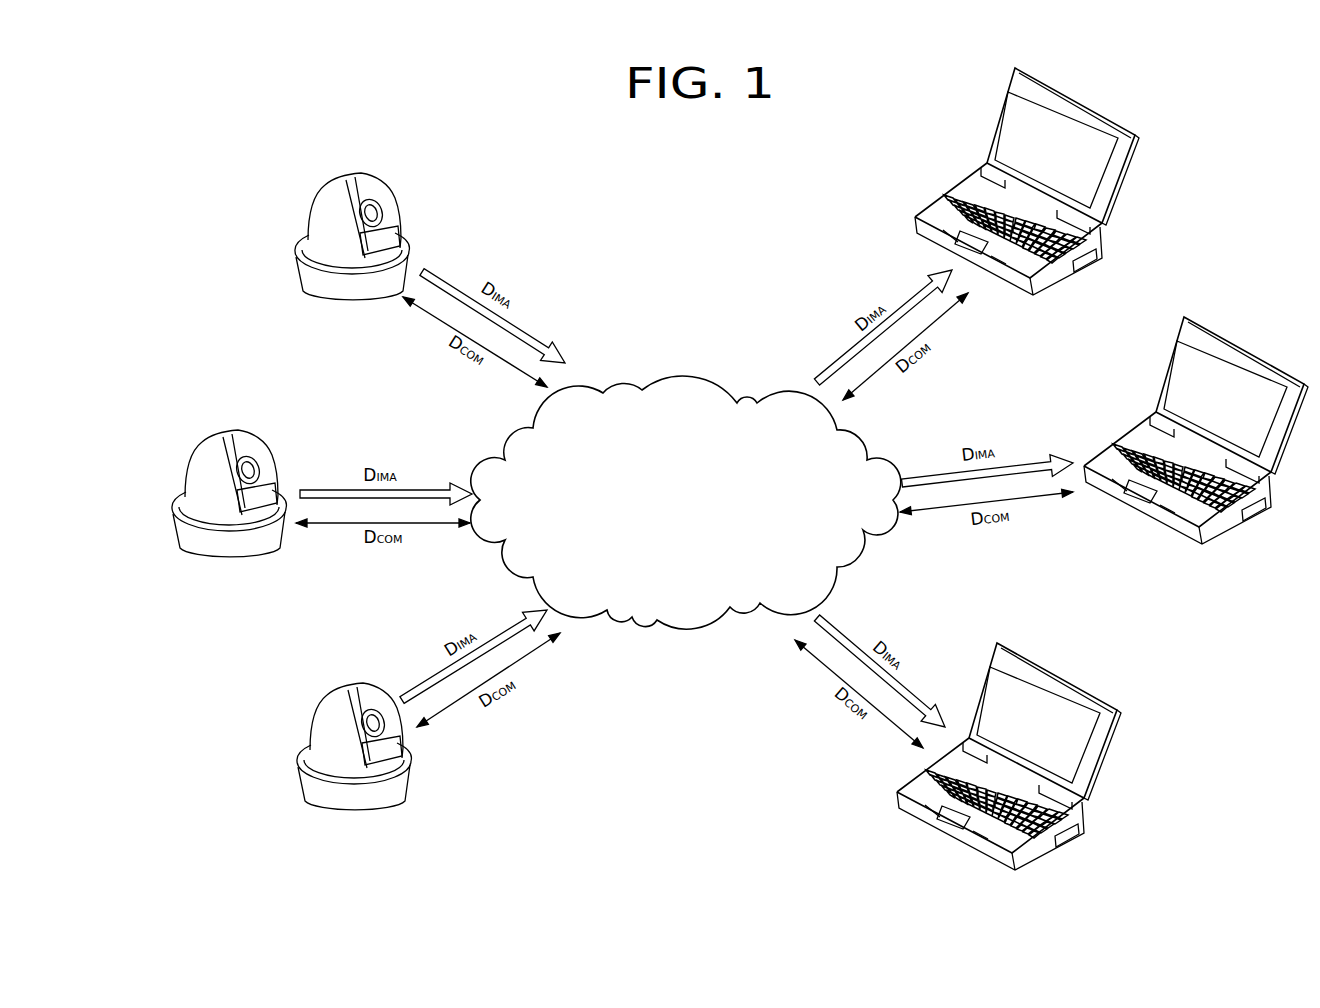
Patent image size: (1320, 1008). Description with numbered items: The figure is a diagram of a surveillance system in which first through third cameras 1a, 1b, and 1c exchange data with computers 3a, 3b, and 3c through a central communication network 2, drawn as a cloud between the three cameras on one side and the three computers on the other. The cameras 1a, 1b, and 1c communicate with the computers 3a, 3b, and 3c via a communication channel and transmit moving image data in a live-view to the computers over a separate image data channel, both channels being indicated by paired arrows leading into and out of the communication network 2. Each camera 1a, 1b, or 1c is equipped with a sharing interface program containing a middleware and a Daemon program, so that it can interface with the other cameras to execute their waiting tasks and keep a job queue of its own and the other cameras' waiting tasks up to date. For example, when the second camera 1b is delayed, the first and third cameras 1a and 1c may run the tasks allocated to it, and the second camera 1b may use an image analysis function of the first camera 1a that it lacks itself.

The first camera 1a is at (323, 293).
The second camera 1b is at (202, 550).
The third camera 1c is at (327, 803).
The communication network 2 is at (683, 378).
The computer 3a is at (951, 195).
The computer 3b is at (1118, 438).
The computer 3c is at (912, 790).